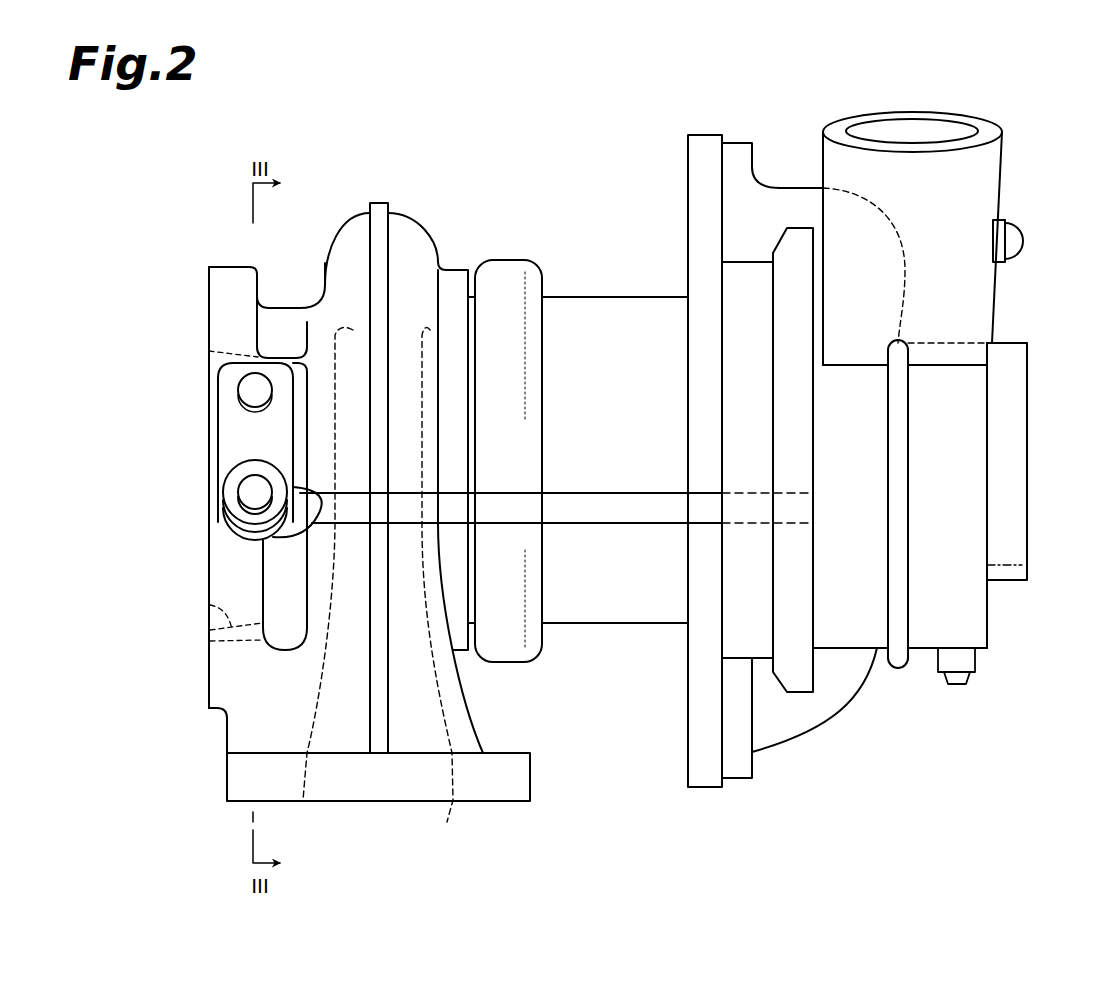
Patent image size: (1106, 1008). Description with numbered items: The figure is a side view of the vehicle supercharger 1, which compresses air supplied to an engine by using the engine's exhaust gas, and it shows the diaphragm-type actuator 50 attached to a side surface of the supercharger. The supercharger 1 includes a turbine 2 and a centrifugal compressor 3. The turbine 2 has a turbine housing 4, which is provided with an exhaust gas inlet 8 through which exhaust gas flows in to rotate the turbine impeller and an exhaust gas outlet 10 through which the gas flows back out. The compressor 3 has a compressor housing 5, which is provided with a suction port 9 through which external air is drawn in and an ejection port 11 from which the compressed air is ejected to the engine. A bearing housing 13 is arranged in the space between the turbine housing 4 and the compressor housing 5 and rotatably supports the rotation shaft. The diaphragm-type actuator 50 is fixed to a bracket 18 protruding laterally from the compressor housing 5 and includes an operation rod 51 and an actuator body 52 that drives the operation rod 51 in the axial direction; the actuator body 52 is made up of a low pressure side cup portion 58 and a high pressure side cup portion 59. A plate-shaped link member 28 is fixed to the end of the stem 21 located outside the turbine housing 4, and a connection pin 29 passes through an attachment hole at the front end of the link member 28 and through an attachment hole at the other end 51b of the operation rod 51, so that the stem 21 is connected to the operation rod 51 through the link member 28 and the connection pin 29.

The supercharger 1 is at (596, 130).
The turbine 2 is at (303, 160).
The compressor 3 is at (794, 120).
The turbine housing 4 is at (330, 242).
The compressor housing 5 is at (778, 174).
The exhaust gas inlet 8 is at (447, 802).
The suction port 9 is at (1000, 352).
The exhaust gas outlet 10 is at (212, 604).
The ejection port 11 is at (944, 132).
The bearing housing 13 is at (628, 296).
The bracket 18 is at (832, 680).
The stem 21 is at (250, 392).
The link member 28 is at (252, 445).
The connection pin 29 is at (252, 492).
The diaphragm-type actuator 50 is at (996, 617).
The operation rod 51 is at (610, 508).
The other end of the operation rod 51b is at (297, 532).
The actuator body 52 is at (912, 579).
The low pressure side cup portion 58 is at (923, 625).
The high pressure side cup portion 59 is at (850, 615).